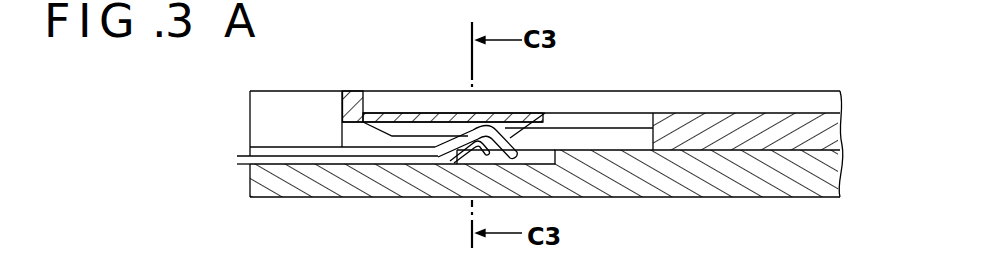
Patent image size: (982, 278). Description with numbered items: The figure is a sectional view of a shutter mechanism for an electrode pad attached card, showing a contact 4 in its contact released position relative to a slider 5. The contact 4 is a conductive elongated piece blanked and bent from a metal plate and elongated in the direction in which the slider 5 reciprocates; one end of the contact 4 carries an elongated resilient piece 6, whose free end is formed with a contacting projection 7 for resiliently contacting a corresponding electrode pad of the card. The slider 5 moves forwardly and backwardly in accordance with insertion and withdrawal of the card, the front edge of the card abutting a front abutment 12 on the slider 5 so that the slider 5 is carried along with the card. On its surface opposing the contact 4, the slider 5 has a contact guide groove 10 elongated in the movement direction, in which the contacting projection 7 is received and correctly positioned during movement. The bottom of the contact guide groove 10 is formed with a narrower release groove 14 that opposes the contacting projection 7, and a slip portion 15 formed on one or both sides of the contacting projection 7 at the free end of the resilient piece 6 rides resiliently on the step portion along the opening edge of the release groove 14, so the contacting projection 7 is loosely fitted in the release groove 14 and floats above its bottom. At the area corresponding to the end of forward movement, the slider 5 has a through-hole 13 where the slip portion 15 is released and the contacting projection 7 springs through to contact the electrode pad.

The contact 4 is at (313, 158).
The slider 5 is at (733, 123).
The elongated resilient piece 6 is at (462, 155).
The contacting projection 7 is at (485, 134).
The contact guide groove 10 is at (627, 143).
The front abutment 12 is at (362, 105).
The through-hole 13 is at (606, 116).
The release groove 14 is at (403, 136).
The slip portion 15 is at (468, 126).